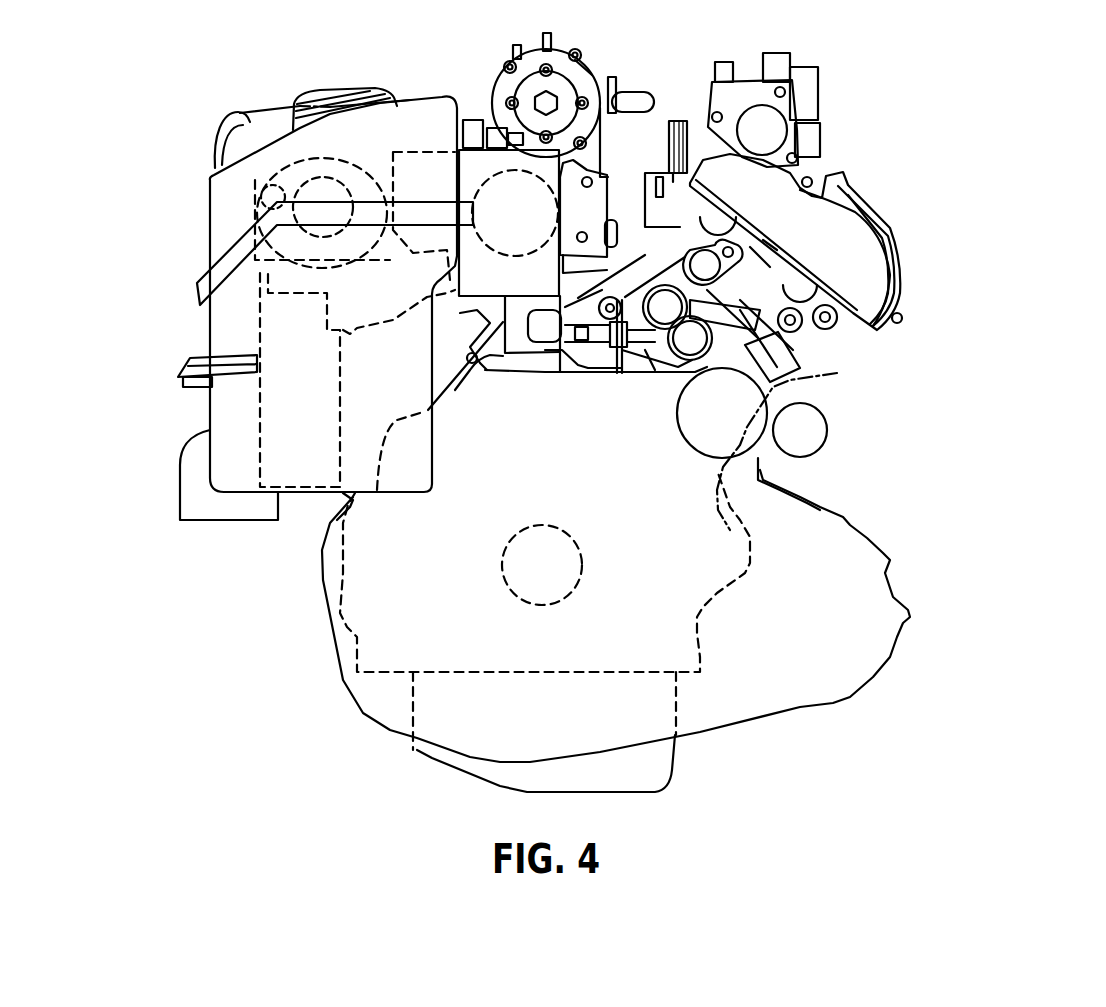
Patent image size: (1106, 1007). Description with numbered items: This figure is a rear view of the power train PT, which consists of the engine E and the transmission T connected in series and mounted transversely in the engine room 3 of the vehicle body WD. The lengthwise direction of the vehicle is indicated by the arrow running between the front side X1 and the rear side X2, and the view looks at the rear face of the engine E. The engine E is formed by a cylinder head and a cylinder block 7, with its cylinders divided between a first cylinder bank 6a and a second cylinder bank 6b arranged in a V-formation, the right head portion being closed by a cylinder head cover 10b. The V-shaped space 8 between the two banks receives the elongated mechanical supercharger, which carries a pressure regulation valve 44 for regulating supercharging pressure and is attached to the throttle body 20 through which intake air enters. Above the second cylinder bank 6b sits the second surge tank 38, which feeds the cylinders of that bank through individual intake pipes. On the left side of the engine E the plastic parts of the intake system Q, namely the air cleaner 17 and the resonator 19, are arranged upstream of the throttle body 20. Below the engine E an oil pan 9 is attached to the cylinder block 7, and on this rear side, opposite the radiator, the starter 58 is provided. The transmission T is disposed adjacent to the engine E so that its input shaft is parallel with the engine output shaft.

The intake system Q is at (180, 190).
The resonator 19 is at (260, 328).
The air cleaner 17 is at (210, 413).
The first cylinder bank 6a is at (473, 113).
The pressure regulation valve 44 is at (570, 92).
The throttle body 20 is at (617, 187).
The V-shaped space 8 is at (632, 151).
The second surge tank 38 is at (780, 92).
The second cylinder bank 6b is at (850, 183).
The cylinder head cover 10b is at (900, 257).
The engine E is at (893, 203).
The starter 58 is at (773, 437).
The cylinder block 7 is at (340, 565).
The engine room 3 is at (915, 421).
The power train PT is at (875, 515).
The oil pan 9 is at (413, 750).
The transmission T is at (893, 660).
The lengthwise direction X1 is at (1030, 352).
The lengthwise direction X2 is at (1055, 357).
The vehicle body WD is at (947, 503).